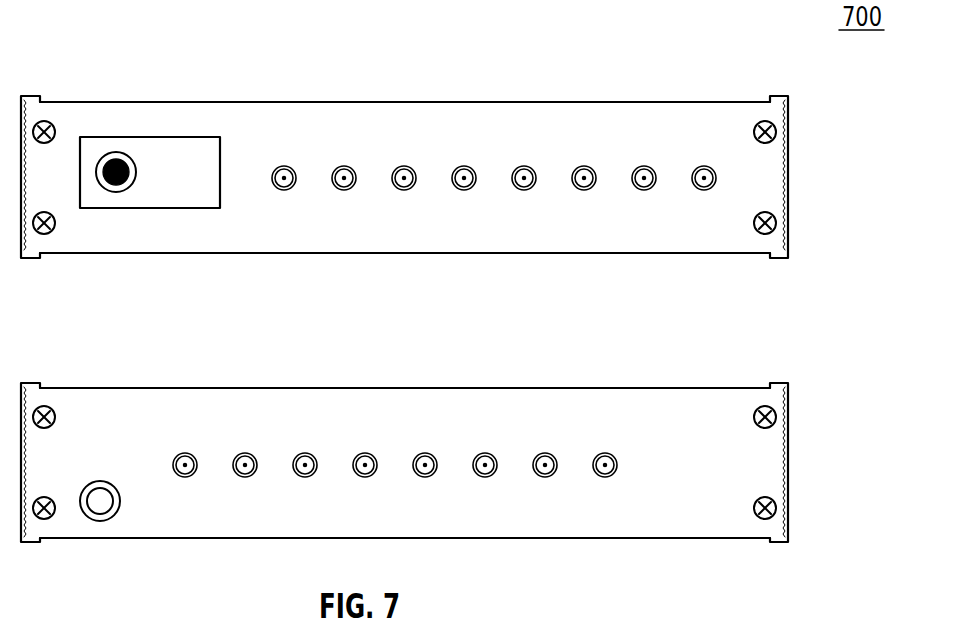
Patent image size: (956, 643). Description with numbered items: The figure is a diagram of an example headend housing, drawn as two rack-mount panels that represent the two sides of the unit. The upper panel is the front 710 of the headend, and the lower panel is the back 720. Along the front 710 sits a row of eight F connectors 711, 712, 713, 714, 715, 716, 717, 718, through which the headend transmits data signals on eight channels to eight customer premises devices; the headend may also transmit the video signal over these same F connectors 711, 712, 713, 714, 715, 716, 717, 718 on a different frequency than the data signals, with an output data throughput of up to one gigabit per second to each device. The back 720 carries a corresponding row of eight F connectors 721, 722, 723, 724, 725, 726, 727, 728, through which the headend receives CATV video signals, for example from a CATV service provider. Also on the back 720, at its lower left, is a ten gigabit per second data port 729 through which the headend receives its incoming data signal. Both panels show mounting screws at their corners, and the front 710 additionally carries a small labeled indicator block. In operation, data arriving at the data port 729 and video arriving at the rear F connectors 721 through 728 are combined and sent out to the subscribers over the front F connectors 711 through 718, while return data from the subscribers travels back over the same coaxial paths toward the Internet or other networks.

The front 710 is at (182, 230).
The F connector 711 is at (284, 166).
The F connector 712 is at (344, 166).
The F connector 713 is at (404, 166).
The F connector 714 is at (464, 166).
The F connector 715 is at (524, 166).
The F connector 716 is at (584, 166).
The F connector 717 is at (644, 166).
The F connector 718 is at (704, 166).
The back 720 is at (273, 517).
The F connector 721 is at (185, 453).
The F connector 722 is at (245, 453).
The F connector 723 is at (305, 453).
The F connector 724 is at (365, 453).
The F connector 725 is at (425, 453).
The F connector 726 is at (485, 453).
The F connector 727 is at (545, 453).
The F connector 728 is at (605, 453).
The 10 Gb/s data port 729 is at (106, 522).